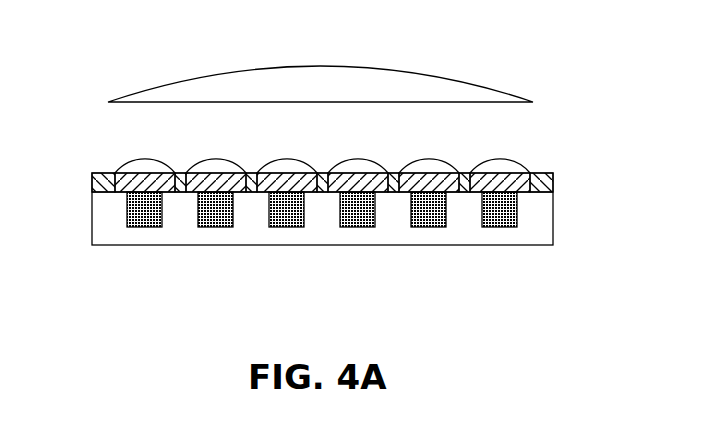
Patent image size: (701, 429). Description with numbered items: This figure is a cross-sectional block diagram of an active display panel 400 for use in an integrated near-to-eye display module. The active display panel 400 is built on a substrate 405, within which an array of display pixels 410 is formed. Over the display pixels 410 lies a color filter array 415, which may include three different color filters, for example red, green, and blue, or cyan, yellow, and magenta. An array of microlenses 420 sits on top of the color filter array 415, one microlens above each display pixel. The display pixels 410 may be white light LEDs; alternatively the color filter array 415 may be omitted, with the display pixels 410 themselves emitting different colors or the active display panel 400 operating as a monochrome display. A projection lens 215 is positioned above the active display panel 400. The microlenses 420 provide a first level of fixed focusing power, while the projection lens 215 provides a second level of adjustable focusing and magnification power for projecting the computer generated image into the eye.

The active display panel 400 is at (594, 84).
The projection lens 215 is at (458, 81).
The substrate 405 is at (323, 245).
The display pixels 410 is at (145, 228).
The color filter array 415 is at (92, 173).
The microlenses 420 is at (200, 160).